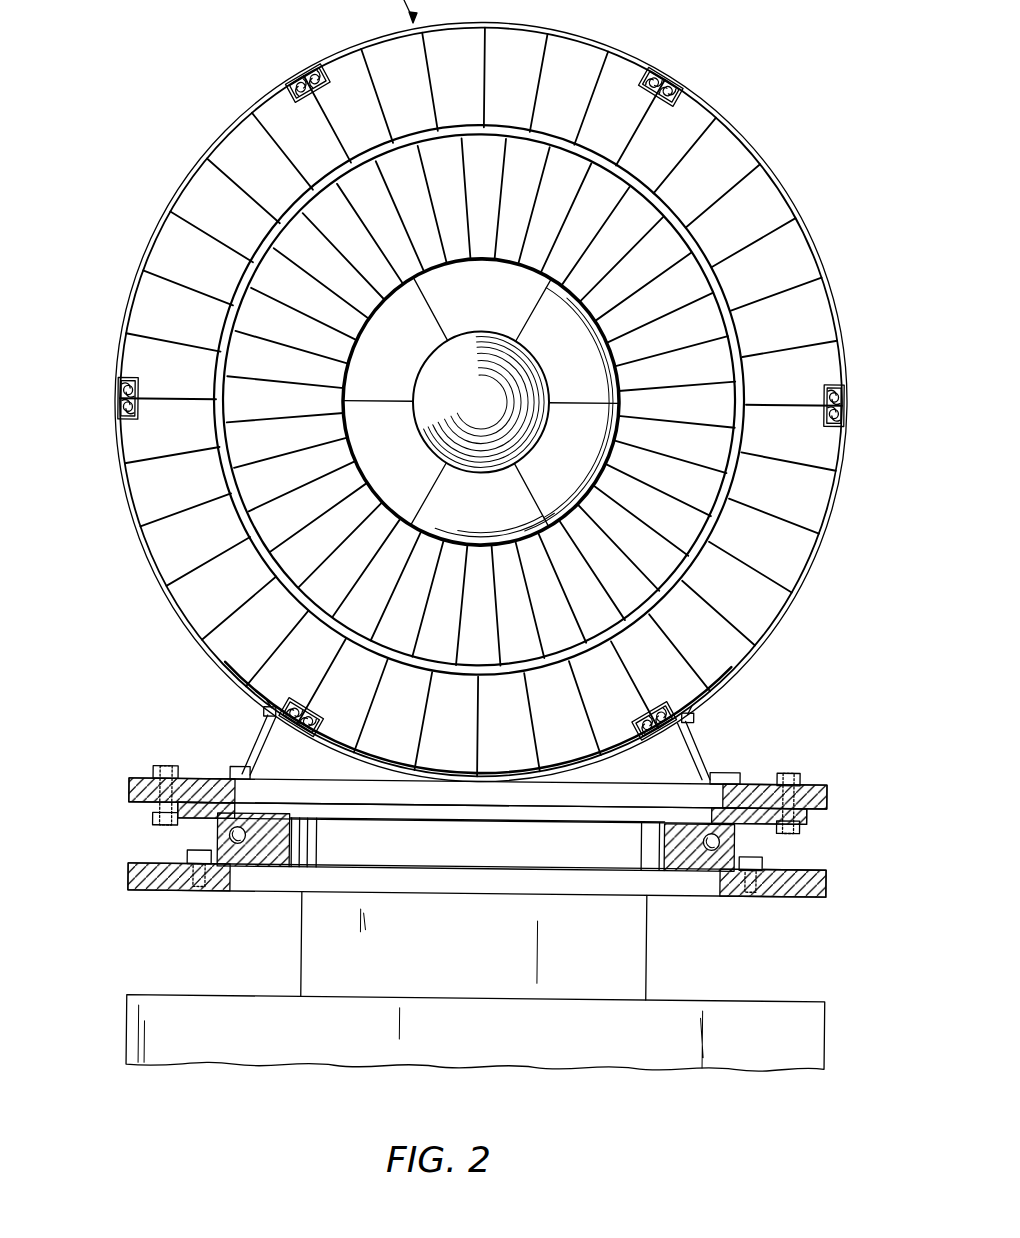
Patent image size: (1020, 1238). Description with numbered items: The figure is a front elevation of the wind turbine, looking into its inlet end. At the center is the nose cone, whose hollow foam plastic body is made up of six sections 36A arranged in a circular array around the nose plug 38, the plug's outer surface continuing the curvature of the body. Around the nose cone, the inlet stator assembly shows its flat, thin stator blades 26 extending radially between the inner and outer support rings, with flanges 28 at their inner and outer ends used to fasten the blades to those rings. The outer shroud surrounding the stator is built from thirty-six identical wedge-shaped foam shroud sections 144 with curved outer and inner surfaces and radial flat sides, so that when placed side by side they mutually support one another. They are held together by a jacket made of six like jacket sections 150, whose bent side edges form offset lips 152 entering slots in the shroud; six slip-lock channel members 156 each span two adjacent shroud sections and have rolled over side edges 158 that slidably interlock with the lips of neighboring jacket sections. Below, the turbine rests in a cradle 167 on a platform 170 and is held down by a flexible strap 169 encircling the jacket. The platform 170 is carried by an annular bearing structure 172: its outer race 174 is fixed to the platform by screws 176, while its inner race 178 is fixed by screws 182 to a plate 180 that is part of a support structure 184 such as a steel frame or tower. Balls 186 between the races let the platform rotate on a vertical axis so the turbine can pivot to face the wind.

The stator blades 26 is at (480, 402).
The flanges 28 is at (479, 399).
The sections 36A is at (481, 401).
The nose plug 38 is at (480, 402).
The shroud sections 144 is at (481, 402).
The jacket sections 150 is at (481, 402).
The offset lips 152 is at (660, 86).
The channel members 156 is at (562, 560).
The rolled over side edges 158 is at (224, 241).
The cradle 167 is at (485, 742).
The flexible strap 169 is at (477, 719).
The platform 170 is at (478, 793).
The annular bearing structure 172 is at (492, 837).
The outer race 174 is at (699, 847).
The screws 176 is at (477, 800).
The inner race 178 is at (304, 842).
The plate 180 is at (477, 880).
The screws 182 is at (474, 871).
The support structure 184 is at (476, 981).
The balls 186 is at (476, 844).